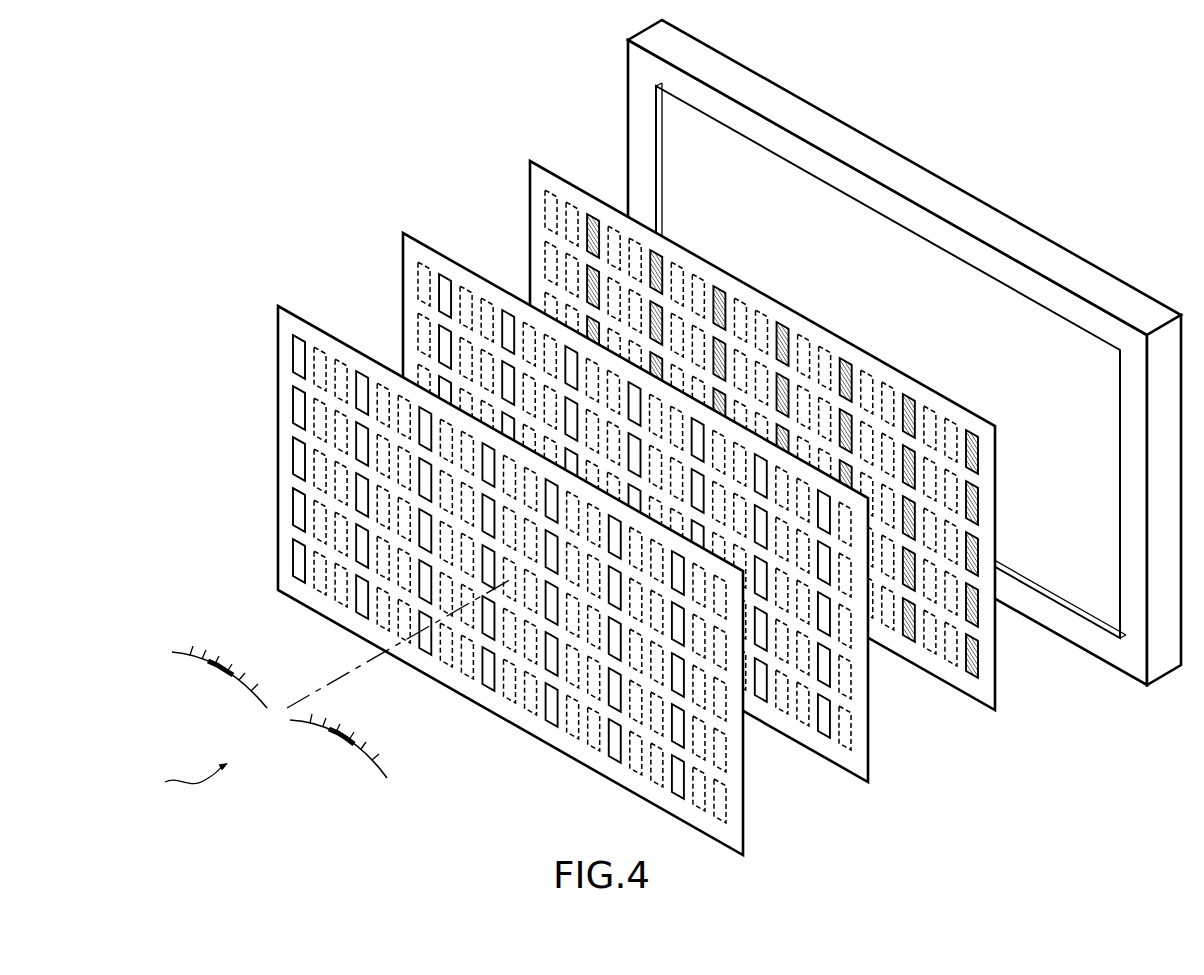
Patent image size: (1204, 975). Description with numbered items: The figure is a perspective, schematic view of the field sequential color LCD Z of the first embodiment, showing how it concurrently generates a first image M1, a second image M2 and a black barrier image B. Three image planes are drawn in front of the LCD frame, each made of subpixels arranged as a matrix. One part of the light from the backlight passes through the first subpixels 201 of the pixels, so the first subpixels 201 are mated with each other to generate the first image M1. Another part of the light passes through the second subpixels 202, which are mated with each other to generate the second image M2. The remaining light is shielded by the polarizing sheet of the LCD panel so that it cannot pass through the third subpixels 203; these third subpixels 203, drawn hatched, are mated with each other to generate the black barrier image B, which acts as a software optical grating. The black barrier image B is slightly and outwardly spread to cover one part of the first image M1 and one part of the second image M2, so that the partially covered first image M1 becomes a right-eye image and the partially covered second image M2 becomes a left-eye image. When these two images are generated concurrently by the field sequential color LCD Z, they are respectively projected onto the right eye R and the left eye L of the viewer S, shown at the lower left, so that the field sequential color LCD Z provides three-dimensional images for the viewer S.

The first subpixels 201 is at (296, 335).
The second subpixels 202 is at (442, 275).
The third subpixels 203 is at (590, 213).
The field sequential color LCD Z is at (1041, 229).
The black barrier image B is at (1005, 684).
The first image M1 is at (752, 828).
The second image M2 is at (878, 756).
The left eye L is at (217, 670).
The right eye R is at (337, 732).
The viewer S is at (188, 785).